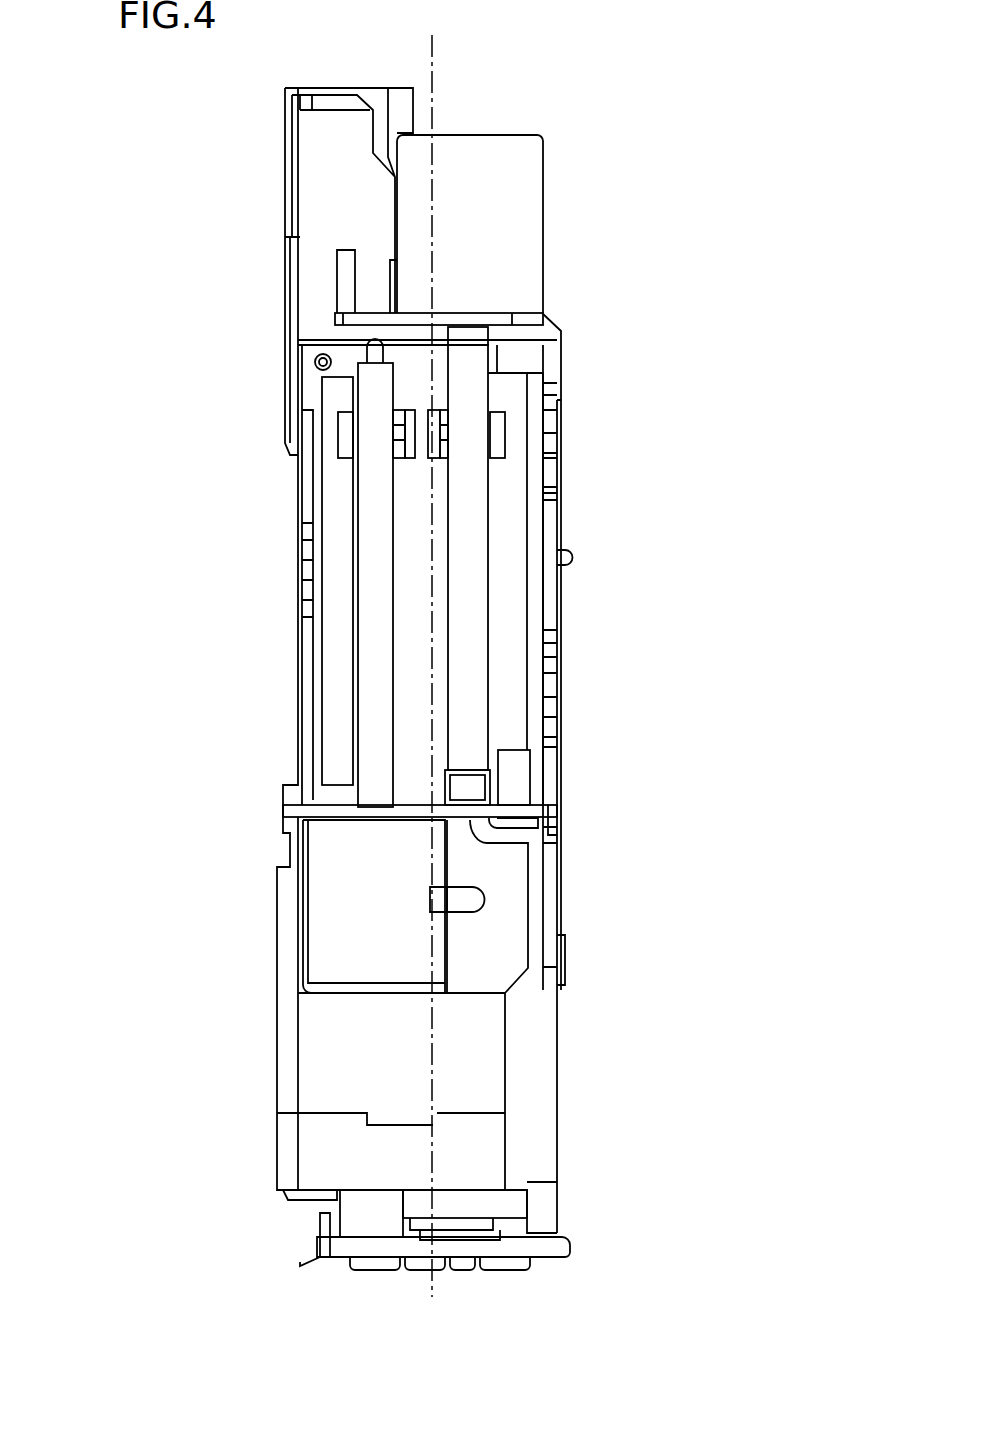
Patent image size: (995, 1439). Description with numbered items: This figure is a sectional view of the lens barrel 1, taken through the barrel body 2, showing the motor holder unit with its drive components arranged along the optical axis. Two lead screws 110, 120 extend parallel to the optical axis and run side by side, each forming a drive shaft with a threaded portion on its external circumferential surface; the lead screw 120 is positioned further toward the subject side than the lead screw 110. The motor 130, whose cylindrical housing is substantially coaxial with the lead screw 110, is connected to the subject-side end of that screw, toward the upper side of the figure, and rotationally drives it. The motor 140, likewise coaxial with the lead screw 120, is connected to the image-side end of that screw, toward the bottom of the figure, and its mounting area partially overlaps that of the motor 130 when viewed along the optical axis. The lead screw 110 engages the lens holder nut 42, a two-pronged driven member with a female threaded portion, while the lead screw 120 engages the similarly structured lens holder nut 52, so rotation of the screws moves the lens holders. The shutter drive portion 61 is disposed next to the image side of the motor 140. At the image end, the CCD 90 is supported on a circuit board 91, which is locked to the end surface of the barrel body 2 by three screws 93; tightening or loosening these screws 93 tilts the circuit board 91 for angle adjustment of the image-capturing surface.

The lens barrel 1 is at (664, 114).
The barrel body 2 is at (342, 198).
The motor 130 is at (478, 260).
The lens holder nut 52 is at (345, 435).
The lens holder nut 42 is at (497, 435).
The lead screw 120 is at (373, 612).
The lead screw 110 is at (465, 605).
The motor 140 is at (347, 900).
The shutter drive portion 61 is at (358, 1058).
The CCD 90 is at (332, 1227).
The circuit board 91 is at (352, 1248).
The screws 93 is at (388, 1268).